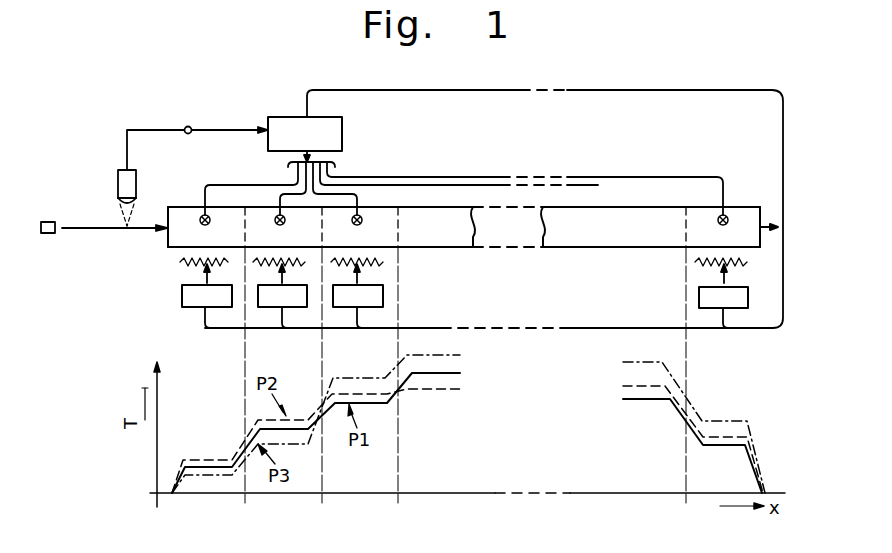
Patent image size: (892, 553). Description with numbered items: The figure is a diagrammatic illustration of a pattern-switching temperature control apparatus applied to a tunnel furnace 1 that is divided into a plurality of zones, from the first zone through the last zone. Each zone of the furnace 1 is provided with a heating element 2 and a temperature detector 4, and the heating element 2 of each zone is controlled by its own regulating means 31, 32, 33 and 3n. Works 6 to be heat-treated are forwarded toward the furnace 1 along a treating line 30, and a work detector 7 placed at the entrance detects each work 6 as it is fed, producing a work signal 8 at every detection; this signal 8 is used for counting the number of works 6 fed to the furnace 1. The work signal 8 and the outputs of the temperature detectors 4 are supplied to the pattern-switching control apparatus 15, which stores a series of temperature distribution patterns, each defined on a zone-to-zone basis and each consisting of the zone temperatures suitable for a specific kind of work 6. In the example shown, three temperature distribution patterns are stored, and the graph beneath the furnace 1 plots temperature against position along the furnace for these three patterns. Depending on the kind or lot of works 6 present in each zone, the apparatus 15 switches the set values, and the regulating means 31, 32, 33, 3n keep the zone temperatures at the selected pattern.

The furnace 1 is at (747, 212).
The heating element 2 is at (182, 264).
The temperature detector 4 is at (202, 214).
The work 6 is at (49, 222).
The work detector 7 is at (118, 182).
The work signal 8 is at (188, 126).
The pattern-switching control apparatus 15 is at (325, 138).
The treating line 30 is at (96, 230).
The regulating means 31 is at (192, 307).
The regulating means 32 is at (268, 307).
The regulating means 33 is at (345, 307).
The regulating means 3n is at (712, 308).